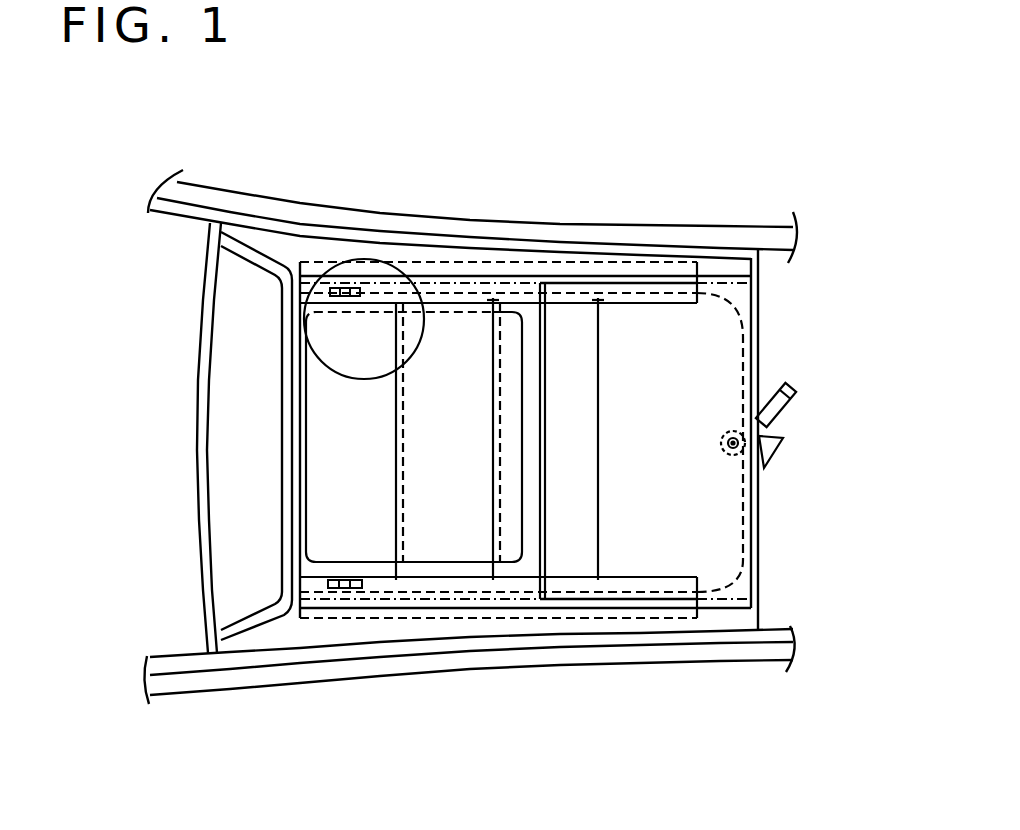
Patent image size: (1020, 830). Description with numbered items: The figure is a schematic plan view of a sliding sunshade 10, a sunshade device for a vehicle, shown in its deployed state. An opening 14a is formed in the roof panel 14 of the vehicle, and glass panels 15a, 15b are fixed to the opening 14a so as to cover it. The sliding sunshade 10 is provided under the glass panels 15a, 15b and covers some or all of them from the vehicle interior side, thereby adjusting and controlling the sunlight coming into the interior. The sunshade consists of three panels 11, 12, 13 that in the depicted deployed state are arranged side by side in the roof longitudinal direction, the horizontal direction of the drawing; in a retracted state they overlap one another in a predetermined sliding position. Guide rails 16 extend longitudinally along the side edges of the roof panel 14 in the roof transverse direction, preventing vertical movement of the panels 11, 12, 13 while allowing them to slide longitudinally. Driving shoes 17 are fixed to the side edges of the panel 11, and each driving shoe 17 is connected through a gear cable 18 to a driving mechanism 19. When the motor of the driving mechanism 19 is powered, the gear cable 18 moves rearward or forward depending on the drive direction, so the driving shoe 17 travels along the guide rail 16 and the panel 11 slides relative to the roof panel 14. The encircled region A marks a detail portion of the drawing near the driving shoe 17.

The sliding sunshade 10 is at (306, 246).
The panel 11 is at (358, 430).
The panel 12 is at (458, 430).
The panel 13 is at (584, 430).
The roof panel 14 is at (397, 256).
The opening 14a is at (290, 448).
The glass panel 15a is at (190, 382).
The glass panel 15b is at (717, 365).
The guide rail 16 is at (578, 274).
The driving shoe 17 is at (347, 289).
The gear cable 18 is at (480, 291).
The driving mechanism 19 is at (771, 466).
The enlarged portion A is at (298, 302).